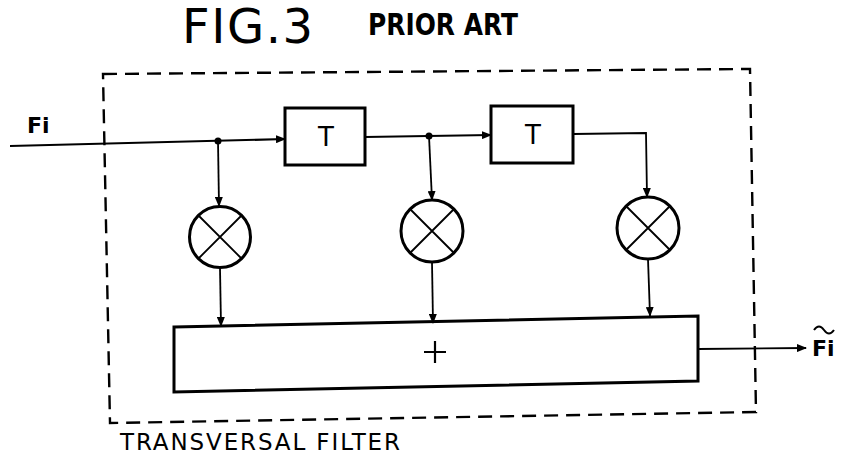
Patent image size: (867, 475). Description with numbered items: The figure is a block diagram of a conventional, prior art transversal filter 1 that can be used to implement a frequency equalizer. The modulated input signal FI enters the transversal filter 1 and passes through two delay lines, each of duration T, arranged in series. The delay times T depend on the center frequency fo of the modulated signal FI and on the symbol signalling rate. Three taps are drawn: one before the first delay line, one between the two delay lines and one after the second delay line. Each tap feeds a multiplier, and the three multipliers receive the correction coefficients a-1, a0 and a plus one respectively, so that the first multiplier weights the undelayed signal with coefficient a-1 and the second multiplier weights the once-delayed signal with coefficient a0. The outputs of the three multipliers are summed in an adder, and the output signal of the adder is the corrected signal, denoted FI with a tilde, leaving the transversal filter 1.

The transversal filter 1 is at (589, 71).
The correction coefficient a-1 is at (312, 236).
The correction coefficient a0 is at (532, 230).